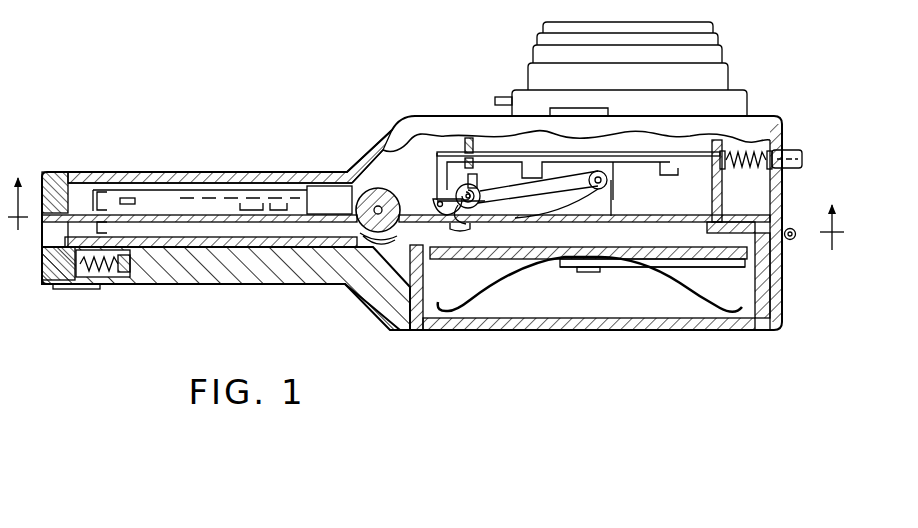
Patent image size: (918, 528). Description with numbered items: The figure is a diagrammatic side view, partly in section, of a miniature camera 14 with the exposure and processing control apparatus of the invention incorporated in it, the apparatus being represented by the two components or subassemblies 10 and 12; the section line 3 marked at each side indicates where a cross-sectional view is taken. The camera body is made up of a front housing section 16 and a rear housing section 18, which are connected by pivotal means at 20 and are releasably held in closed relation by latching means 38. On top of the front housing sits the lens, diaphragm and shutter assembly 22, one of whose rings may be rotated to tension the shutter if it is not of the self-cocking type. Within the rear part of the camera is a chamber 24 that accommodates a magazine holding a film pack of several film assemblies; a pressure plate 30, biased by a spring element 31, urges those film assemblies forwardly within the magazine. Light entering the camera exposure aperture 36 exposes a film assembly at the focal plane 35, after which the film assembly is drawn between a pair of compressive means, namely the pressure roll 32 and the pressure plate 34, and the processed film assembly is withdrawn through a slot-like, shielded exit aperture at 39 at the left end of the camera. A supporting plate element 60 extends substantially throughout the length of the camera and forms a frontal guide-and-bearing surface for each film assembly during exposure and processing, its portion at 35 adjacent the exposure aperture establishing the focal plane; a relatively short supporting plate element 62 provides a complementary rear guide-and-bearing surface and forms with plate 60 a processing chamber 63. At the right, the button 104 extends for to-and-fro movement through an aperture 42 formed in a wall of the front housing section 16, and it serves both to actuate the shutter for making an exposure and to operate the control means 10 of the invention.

The section line 3- 3 is at (426, 228).
The control means 10 is at (625, 196).
The apparatus subassembly 12 is at (91, 199).
The miniature camera 14 is at (788, 121).
The front housing section 16 is at (766, 112).
The rear housing section 18 is at (784, 329).
The pivotal means 20 is at (791, 229).
The lens, diaphragm and shutter assembly 22 is at (736, 46).
The chamber 24 is at (734, 288).
The pressure plate 30 is at (470, 258).
The spring element 31 is at (680, 281).
The pressure roll 32 is at (381, 188).
The pressure plate 34 is at (383, 263).
The focal plane 35 is at (512, 231).
The exposure aperture 36 is at (640, 234).
The latching means 38 is at (36, 250).
The exit aperture 39 is at (61, 227).
The aperture 42 is at (792, 150).
The supporting plate element 60 is at (190, 234).
The supporting plate element 62 is at (118, 229).
The processing chamber 63 is at (110, 265).
The button 104 is at (635, 171).